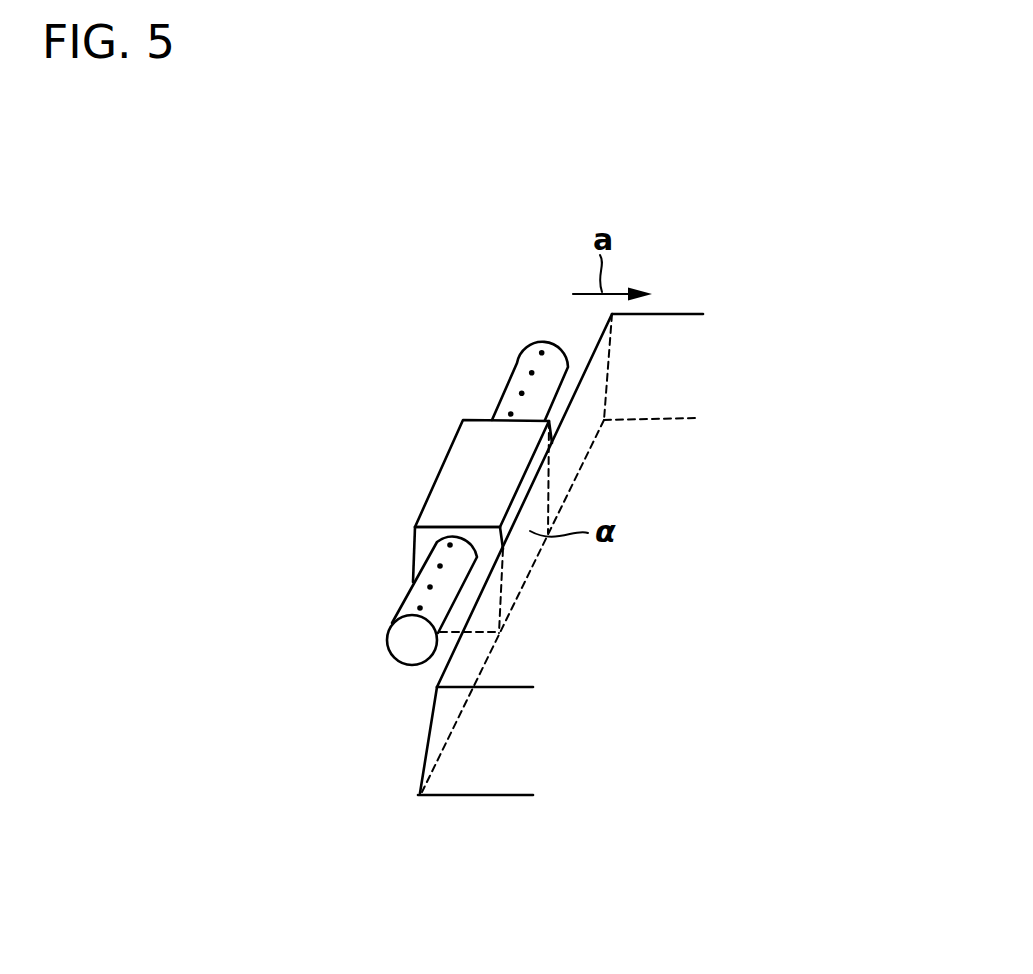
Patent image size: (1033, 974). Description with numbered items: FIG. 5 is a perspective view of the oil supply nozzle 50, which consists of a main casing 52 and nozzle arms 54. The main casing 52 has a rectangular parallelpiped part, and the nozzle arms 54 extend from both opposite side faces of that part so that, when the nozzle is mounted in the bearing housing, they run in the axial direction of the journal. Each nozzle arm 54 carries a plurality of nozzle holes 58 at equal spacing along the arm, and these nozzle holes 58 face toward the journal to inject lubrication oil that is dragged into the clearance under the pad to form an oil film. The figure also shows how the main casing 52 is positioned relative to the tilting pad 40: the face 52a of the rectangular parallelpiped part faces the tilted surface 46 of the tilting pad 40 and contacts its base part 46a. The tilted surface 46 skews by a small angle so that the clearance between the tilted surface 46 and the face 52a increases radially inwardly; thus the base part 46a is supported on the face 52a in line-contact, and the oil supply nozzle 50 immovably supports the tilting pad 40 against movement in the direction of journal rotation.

The tilting pad 40 is at (689, 292).
The tilted surface 46 is at (468, 657).
The base part of the tilted surface 46a is at (533, 573).
The oil supply nozzle 50 is at (433, 434).
The main casing 52 is at (412, 548).
The face of the rectangular parallelpiped part 52a is at (545, 492).
The nozzle arm 54 is at (514, 366).
The nozzle hole 58 is at (417, 606).